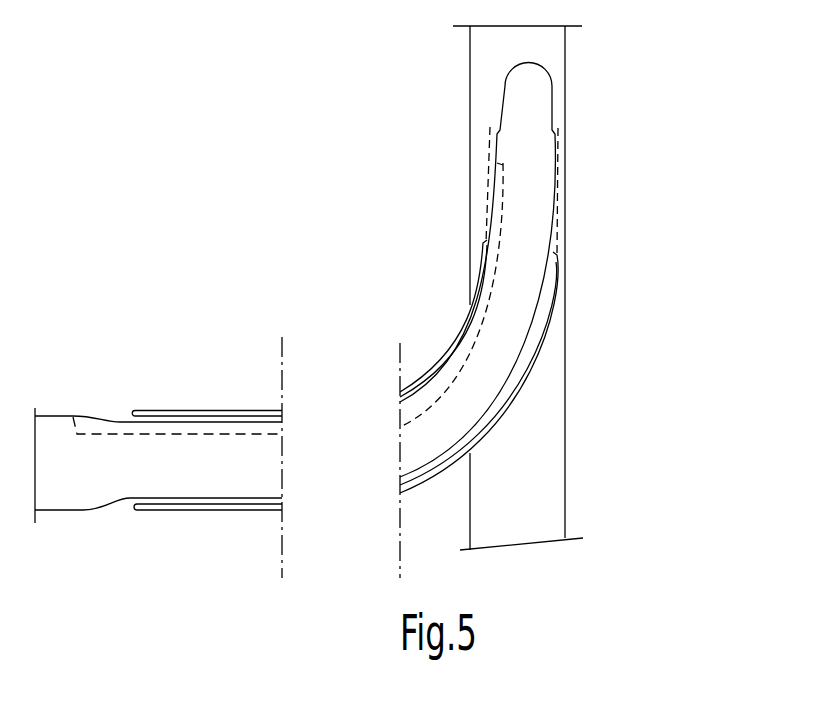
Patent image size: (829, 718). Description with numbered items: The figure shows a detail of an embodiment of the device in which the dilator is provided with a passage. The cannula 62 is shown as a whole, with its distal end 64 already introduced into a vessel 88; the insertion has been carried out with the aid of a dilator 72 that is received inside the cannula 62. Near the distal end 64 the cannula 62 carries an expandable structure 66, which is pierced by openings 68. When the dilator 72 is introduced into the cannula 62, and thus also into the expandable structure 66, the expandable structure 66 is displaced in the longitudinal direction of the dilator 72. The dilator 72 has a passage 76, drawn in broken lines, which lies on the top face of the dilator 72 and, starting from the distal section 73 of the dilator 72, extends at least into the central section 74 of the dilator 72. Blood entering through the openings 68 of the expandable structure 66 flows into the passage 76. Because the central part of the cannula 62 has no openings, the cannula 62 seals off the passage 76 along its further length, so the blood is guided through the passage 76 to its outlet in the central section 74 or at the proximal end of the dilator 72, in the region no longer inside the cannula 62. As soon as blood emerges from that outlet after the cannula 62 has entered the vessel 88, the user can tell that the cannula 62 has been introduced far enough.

The cannula 62 is at (508, 413).
The distal end of the cannula 64 is at (470, 138).
The expandable structure 66 is at (558, 200).
The openings of the expandable structure 68 is at (558, 157).
The dilator 72 is at (528, 272).
The distal section of the dilator 73 is at (483, 193).
The central section of the dilator 74 is at (58, 416).
The passage 76 is at (468, 305).
The vessel 88 is at (535, 486).